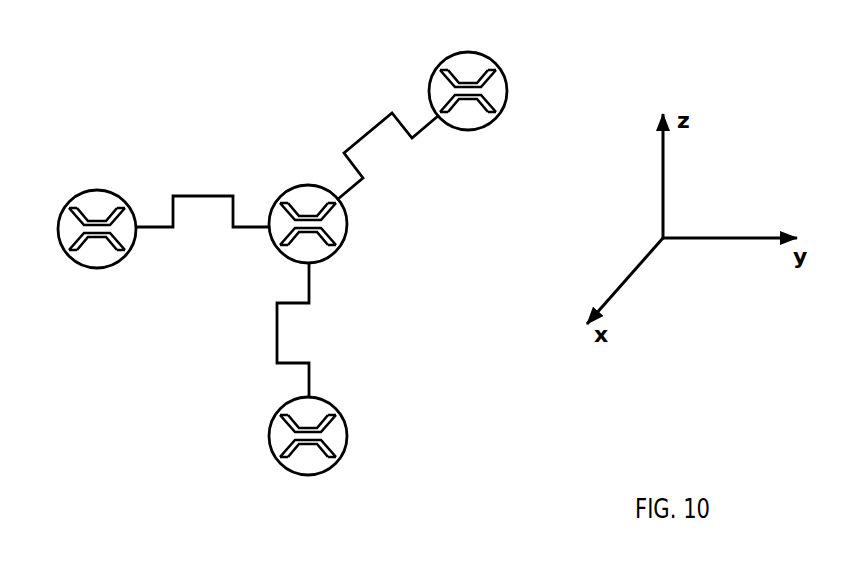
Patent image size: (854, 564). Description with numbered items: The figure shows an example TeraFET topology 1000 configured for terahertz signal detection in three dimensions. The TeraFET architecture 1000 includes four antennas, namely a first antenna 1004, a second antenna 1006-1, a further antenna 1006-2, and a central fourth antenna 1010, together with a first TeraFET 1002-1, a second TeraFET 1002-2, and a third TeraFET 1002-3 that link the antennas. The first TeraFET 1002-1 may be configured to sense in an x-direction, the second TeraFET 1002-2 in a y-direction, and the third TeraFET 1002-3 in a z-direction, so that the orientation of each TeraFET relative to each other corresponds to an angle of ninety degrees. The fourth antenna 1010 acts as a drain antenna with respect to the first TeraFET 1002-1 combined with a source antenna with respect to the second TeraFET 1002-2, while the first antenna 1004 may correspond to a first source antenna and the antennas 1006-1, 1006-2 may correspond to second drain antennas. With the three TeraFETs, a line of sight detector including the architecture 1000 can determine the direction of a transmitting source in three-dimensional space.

The TeraFET topology 1000 is at (126, 51).
The first TeraFET 1002-1 is at (202, 182).
The second TeraFET 1002-2 is at (320, 324).
The third TeraFET 1002-3 is at (401, 170).
The first antenna 1004 is at (102, 189).
The second antenna 1006-1 is at (375, 427).
The fourth antenna 1006-2 is at (503, 108).
The fourth antenna 1010 is at (346, 230).